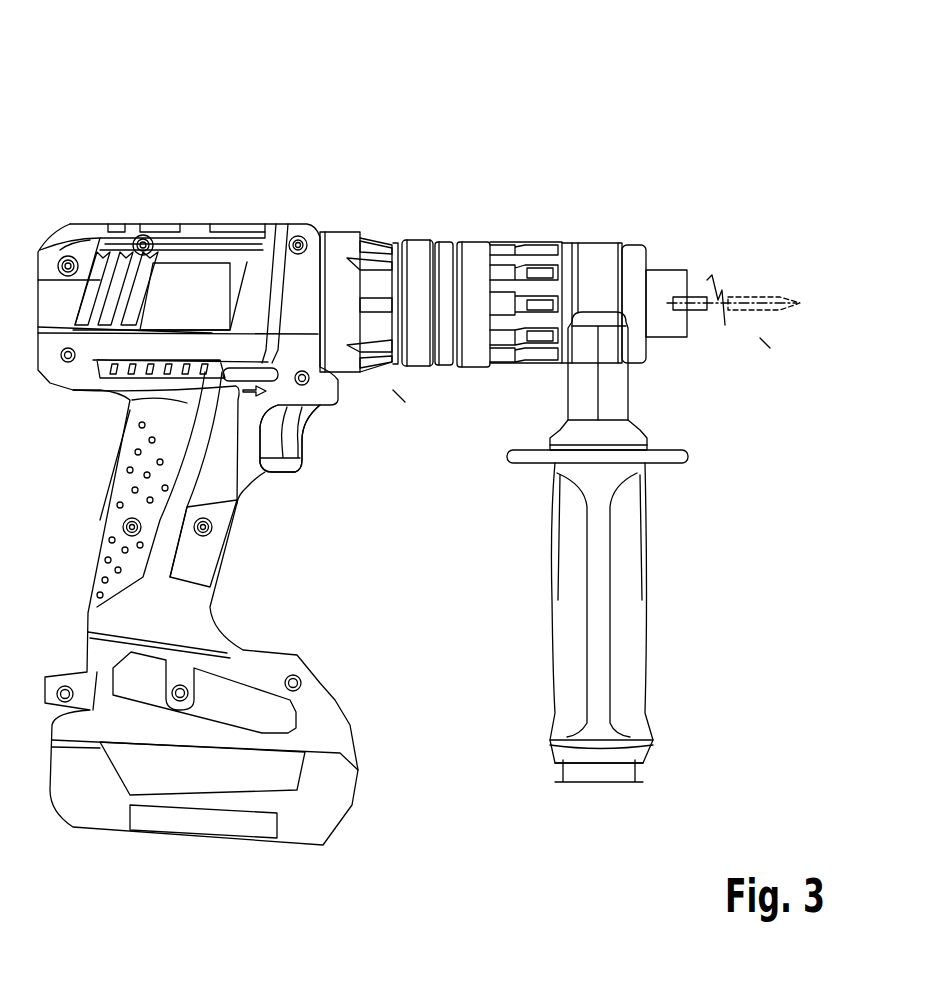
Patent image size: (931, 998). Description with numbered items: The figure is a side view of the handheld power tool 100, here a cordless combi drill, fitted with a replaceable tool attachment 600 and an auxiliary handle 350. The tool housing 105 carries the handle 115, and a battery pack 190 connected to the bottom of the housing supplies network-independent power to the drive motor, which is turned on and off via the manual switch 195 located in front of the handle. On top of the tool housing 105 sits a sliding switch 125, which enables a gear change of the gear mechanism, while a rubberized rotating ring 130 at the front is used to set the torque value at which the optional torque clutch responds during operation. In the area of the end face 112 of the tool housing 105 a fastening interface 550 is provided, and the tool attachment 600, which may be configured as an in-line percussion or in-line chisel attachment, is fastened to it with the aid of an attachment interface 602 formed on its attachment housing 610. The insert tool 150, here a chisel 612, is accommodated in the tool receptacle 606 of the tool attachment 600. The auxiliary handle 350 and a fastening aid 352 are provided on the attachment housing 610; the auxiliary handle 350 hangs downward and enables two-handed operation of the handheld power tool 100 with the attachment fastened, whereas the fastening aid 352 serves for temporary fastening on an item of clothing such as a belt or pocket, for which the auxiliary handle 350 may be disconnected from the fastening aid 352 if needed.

The handheld power tool 100 is at (208, 76).
The tool housing 105 is at (128, 248).
The end face 112 is at (392, 389).
The handle 115 is at (185, 497).
The sliding switch 125 is at (211, 233).
The rubberized rotating ring 130 is at (370, 232).
The insert tool 150 is at (757, 335).
The battery pack 190 is at (217, 818).
The manual switch 195 is at (280, 432).
The auxiliary handle 350 is at (623, 655).
The fastening aid 352 is at (610, 380).
The fastening interface 550 is at (405, 205).
The tool attachment 600 is at (517, 270).
The attachment interface 602 is at (426, 205).
The tool receptacle 606 is at (662, 283).
The attachment housing 610 is at (517, 307).
The chisel 612 is at (745, 298).